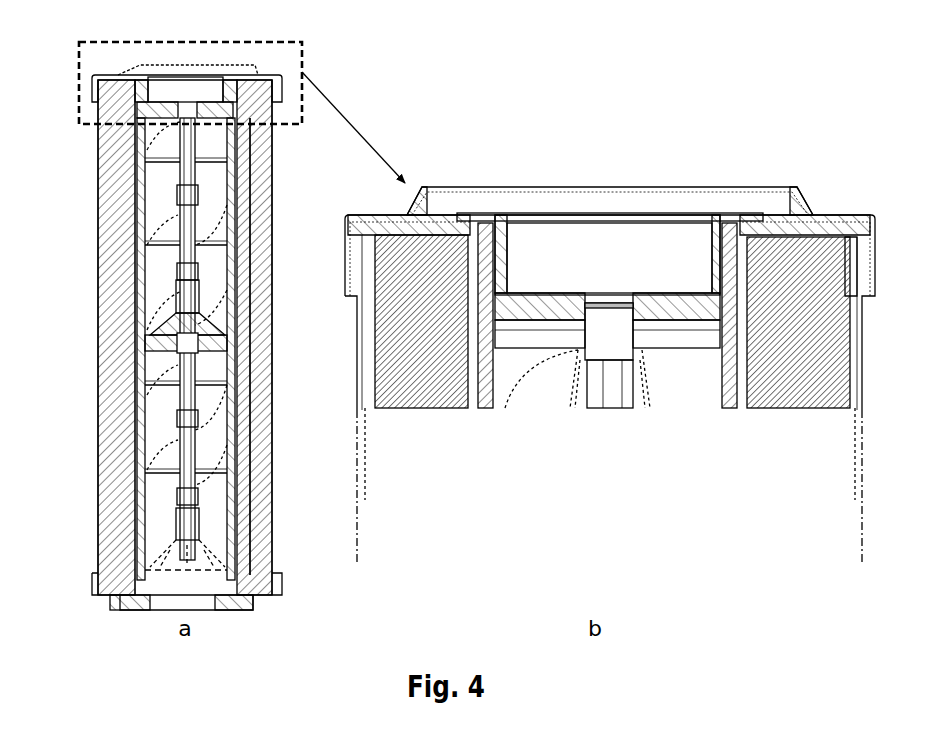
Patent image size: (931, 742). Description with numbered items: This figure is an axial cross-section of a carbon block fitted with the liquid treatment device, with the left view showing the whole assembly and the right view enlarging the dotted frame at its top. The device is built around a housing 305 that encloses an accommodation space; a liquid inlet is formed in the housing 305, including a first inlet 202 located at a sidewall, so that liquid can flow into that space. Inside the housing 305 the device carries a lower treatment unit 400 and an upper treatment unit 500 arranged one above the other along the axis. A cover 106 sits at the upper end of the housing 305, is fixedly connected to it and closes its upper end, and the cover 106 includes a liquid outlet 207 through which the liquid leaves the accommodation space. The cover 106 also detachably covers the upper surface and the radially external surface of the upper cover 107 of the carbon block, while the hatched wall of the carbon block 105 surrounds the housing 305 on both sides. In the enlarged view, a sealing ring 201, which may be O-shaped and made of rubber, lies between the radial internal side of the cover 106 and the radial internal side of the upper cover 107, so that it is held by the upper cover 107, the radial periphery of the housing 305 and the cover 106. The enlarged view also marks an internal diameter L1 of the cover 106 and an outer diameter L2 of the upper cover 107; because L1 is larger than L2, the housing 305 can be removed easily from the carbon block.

The sound absorbing member 105 is at (125, 455).
The cover 106 is at (90, 100).
The upper cover 107 is at (850, 247).
The sealing ring 201 is at (483, 218).
The first inlet 202 is at (138, 340).
The liquid outlet 207 is at (186, 88).
The housing 305 is at (138, 400).
The lower treatment unit 400 is at (252, 453).
The upper treatment unit 500 is at (252, 226).
The internal diameter of the cover L1 is at (862, 557).
The outer diameter of the upper cover L2 is at (855, 496).